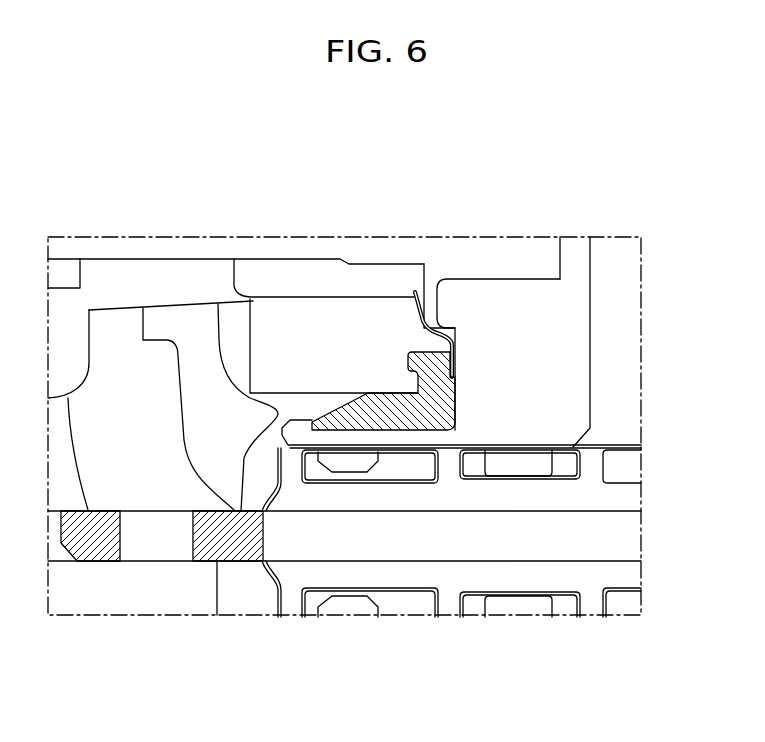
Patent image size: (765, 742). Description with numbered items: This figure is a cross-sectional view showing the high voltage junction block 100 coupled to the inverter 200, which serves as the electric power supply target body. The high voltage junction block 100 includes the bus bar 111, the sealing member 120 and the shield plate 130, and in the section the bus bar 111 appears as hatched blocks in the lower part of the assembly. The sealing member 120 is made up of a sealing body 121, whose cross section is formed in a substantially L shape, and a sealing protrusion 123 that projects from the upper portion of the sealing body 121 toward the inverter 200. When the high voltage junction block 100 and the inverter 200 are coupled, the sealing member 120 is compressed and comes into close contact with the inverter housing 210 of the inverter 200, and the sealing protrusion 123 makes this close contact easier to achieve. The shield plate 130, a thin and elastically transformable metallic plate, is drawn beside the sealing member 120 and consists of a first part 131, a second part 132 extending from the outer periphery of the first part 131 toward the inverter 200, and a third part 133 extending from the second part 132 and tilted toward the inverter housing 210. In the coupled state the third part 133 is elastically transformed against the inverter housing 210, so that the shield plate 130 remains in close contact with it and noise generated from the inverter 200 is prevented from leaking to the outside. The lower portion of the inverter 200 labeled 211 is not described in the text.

The high voltage junction block 100 is at (628, 350).
The bus bar 111 is at (100, 545).
The sealing member 120 is at (382, 453).
The sealing body 121 is at (420, 415).
The sealing protrusion 123 is at (408, 355).
The shield plate 130 is at (478, 290).
The first part 131 is at (460, 363).
The second part 132 is at (440, 327).
The third part 133 is at (424, 281).
The inverter 200 is at (203, 232).
The inverter housing 210 is at (302, 270).
The housing lower portion 211 is at (170, 587).